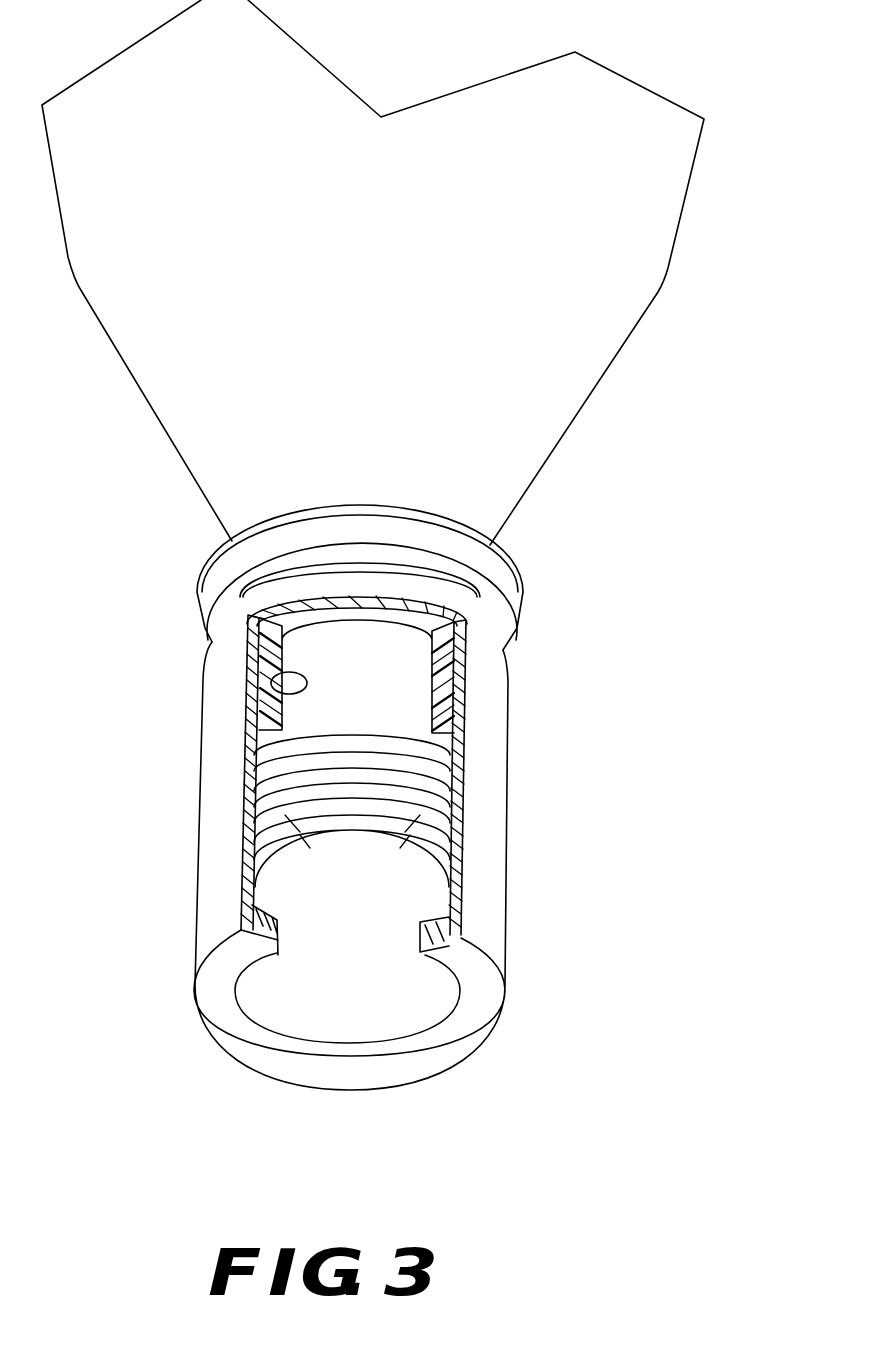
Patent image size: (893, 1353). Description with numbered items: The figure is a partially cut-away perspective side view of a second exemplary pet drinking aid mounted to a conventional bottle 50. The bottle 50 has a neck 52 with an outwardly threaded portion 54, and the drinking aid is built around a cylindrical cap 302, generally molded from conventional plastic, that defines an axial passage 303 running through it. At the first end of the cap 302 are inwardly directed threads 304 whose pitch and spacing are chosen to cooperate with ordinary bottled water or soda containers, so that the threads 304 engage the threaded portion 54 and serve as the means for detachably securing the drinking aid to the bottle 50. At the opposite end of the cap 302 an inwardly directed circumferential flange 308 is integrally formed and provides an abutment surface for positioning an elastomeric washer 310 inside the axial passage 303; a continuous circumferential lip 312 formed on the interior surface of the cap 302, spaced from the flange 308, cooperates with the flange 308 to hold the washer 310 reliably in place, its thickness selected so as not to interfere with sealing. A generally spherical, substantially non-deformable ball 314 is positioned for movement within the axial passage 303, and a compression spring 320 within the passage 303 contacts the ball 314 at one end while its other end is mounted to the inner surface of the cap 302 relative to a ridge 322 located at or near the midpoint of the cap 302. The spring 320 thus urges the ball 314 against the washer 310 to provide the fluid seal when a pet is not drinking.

The bottle 50 is at (621, 352).
The neck 52 is at (443, 573).
The outwardly threaded portion 54 is at (281, 690).
The cylindrical cap 302 is at (485, 810).
The axial passage 303 is at (257, 757).
The inwardly directed threads 304 is at (447, 690).
The flange 308 is at (253, 1038).
The washer 310 is at (242, 932).
The circumferential lip 312 is at (440, 903).
The ball 314 is at (377, 995).
The compression spring 320 is at (260, 810).
The ridge 322 is at (465, 748).